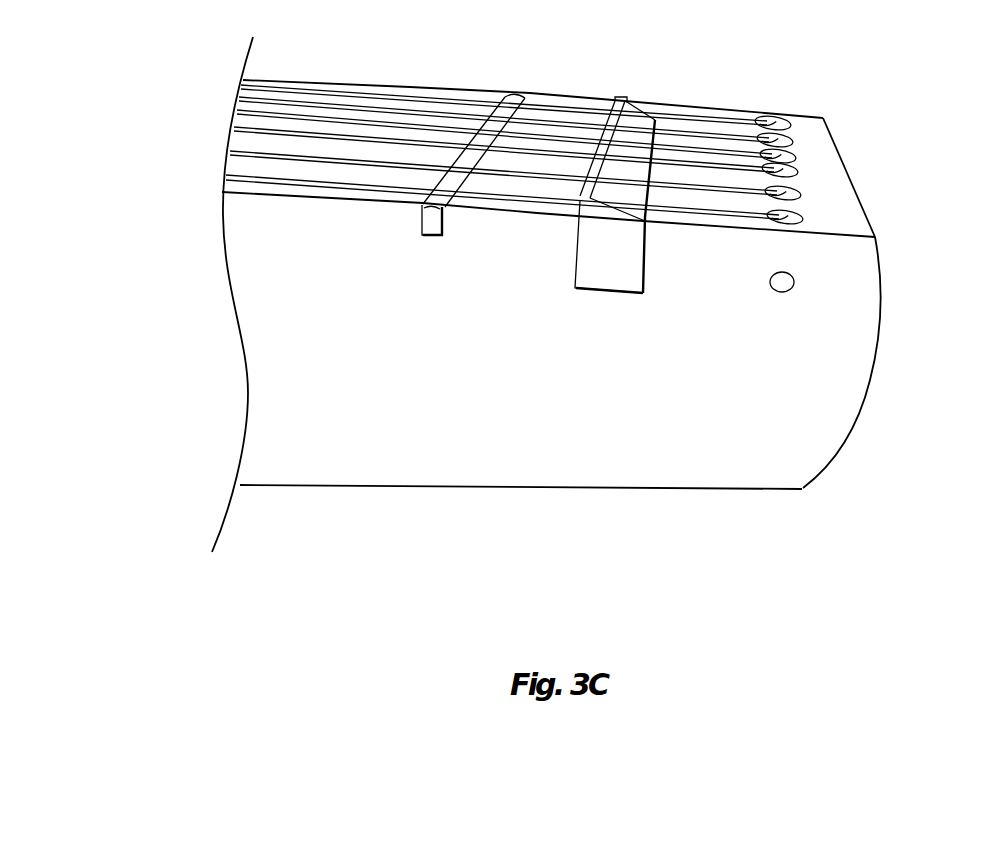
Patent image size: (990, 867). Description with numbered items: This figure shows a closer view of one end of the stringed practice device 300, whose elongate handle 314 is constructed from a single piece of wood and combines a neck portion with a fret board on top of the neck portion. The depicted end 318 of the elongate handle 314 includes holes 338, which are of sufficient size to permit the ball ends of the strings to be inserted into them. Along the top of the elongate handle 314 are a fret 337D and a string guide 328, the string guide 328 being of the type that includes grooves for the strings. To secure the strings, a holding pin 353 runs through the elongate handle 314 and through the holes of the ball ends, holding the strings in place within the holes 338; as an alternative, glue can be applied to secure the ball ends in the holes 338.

The stringed practice device 300 is at (183, 88).
The elongate handle 314 is at (715, 490).
The end 318 is at (882, 291).
The string guide 328 is at (622, 272).
The fret 337D is at (433, 222).
The holes 338 is at (838, 108).
The holding pin 353 is at (783, 284).